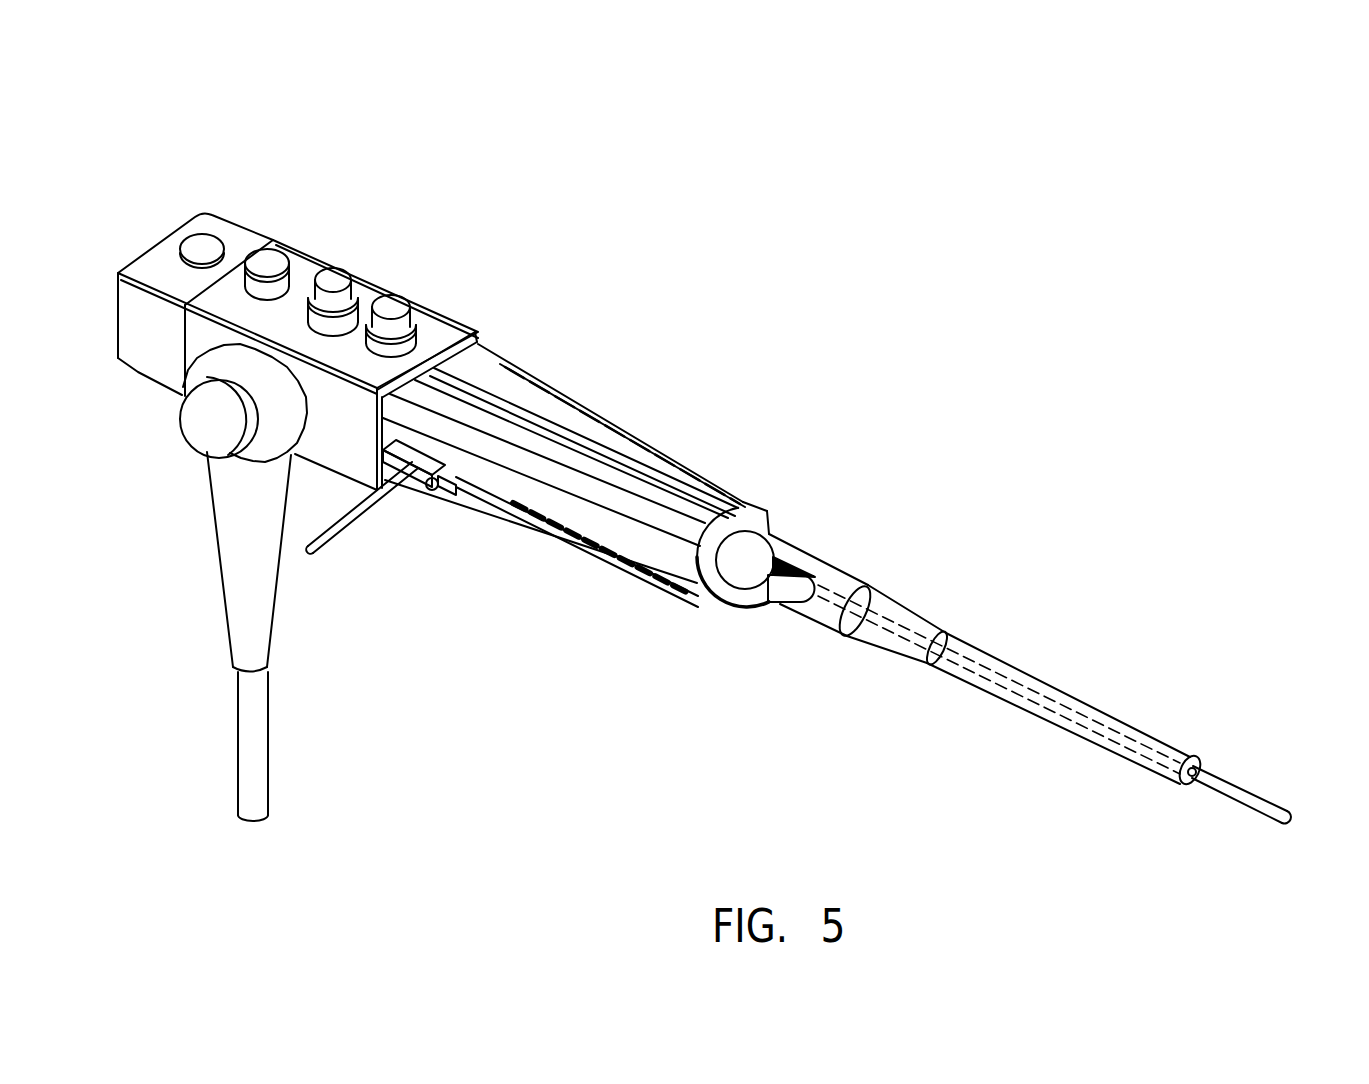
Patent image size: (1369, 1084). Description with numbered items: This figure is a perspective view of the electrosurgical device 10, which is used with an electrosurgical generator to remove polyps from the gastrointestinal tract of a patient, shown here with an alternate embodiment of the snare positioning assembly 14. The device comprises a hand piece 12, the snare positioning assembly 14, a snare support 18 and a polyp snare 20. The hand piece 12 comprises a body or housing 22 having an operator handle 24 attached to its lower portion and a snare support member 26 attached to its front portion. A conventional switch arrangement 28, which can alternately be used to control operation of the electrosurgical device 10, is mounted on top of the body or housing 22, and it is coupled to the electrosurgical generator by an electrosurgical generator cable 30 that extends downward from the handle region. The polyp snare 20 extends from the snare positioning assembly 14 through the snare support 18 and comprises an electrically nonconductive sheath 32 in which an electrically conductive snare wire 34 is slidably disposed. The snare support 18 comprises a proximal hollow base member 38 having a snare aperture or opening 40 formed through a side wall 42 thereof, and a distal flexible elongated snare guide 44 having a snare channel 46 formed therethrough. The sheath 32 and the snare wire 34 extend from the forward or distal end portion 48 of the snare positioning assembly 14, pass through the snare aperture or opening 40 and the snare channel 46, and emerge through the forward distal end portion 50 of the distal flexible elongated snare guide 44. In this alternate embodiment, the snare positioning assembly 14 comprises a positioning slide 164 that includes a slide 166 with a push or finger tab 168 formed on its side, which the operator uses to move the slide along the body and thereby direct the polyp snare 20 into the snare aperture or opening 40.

The electrosurgical device 10 is at (468, 183).
The hand piece 12 is at (404, 207).
The snare positioning assembly 14 is at (558, 595).
The snare support 18 is at (940, 607).
The polyp snare 20 is at (719, 657).
The body or housing 22 is at (288, 233).
The operator handle 24 is at (210, 626).
The snare support member 26 is at (678, 381).
The switch arrangement 28 is at (333, 262).
The electrosurgical generator cable 30 is at (242, 727).
The electrically nonconductive sheath 32 is at (745, 608).
The electrically conductive snare wire 34 is at (1250, 805).
The proximal hollow base member 38 is at (832, 568).
The snare aperture or opening 40 is at (787, 543).
The side wall 42 is at (818, 577).
The distal flexible elongated snare guide 44 is at (987, 657).
The snare channel 46 is at (1040, 688).
The forward or distal end portion 48 is at (681, 641).
The forward distal end portion 50 is at (1165, 762).
The positioning slide 164 is at (475, 556).
The slide 166 is at (413, 452).
The push or finger tab 168 is at (338, 514).